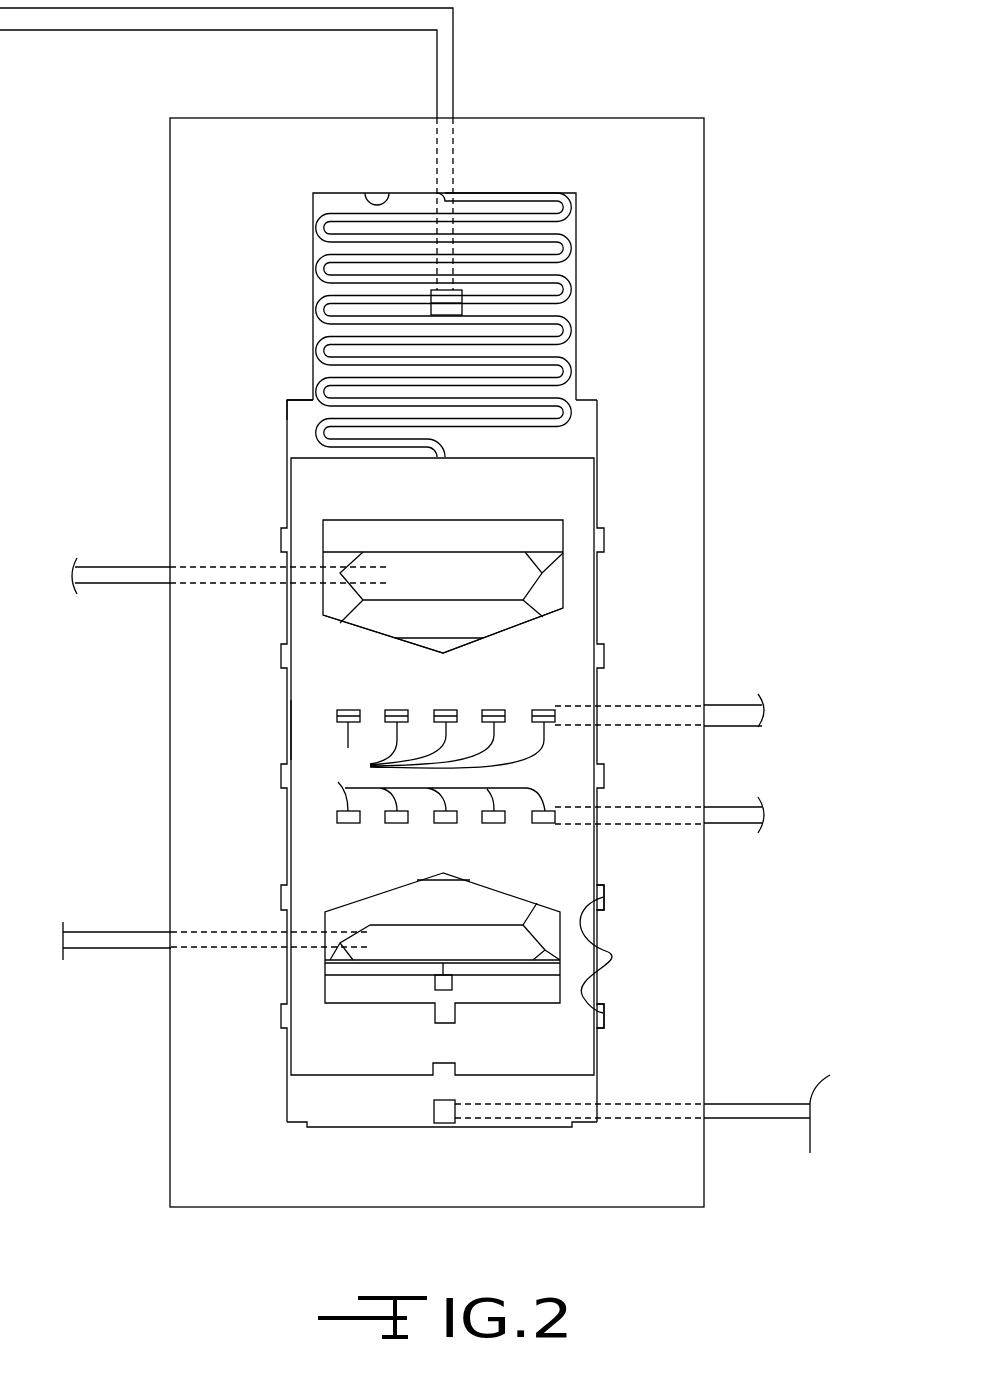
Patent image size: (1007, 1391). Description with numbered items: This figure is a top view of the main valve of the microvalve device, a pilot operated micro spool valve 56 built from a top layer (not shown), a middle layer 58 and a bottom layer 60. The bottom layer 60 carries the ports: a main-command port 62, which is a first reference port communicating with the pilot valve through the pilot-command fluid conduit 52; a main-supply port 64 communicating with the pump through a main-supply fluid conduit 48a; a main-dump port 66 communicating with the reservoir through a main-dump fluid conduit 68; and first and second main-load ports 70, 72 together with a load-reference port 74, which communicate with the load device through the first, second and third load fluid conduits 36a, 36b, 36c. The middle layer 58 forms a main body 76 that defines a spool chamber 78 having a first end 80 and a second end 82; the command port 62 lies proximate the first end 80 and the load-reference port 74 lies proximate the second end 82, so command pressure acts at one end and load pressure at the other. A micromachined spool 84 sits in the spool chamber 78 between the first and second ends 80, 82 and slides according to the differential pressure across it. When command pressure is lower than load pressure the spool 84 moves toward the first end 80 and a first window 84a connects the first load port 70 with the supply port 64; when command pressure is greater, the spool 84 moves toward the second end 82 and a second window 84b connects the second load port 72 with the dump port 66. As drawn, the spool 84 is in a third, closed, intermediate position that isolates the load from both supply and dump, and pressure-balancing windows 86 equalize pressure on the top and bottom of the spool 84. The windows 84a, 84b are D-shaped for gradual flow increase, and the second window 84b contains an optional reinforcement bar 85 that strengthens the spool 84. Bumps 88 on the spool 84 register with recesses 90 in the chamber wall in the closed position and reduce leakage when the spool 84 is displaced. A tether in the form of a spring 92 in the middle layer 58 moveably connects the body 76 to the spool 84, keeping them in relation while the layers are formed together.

The first load fluid conduit 36a is at (730, 704).
The second load fluid conduit 36b is at (735, 806).
The third load fluid conduit 36c is at (752, 1103).
The main-supply fluid conduit 48a is at (120, 567).
The pilot-command fluid conduit 52 is at (457, 60).
The micro spool valve 56 is at (740, 353).
The middle layer 58 is at (663, 475).
The bottom layer 60 is at (580, 437).
The main-command port 62 is at (448, 304).
The main-supply port 64 is at (410, 598).
The main-dump port 66 is at (428, 928).
The main-dump fluid conduit 68 is at (125, 950).
The first main-load port 70 is at (490, 710).
The second main-load port 72 is at (497, 823).
The load-reference port 74 is at (442, 1117).
The main body 76 is at (183, 383).
The spool chamber 78 is at (290, 430).
The first end 80 is at (378, 202).
The second end 82 is at (355, 1127).
The micromachined spool 84 is at (317, 730).
The first window 84a is at (512, 626).
The second window 84b is at (560, 930).
The reinforcement bar 85 is at (403, 967).
The pressure-balancing windows 86 is at (370, 766).
The bumps 88 is at (603, 947).
The recesses 90 is at (606, 897).
The spring 92 is at (338, 272).